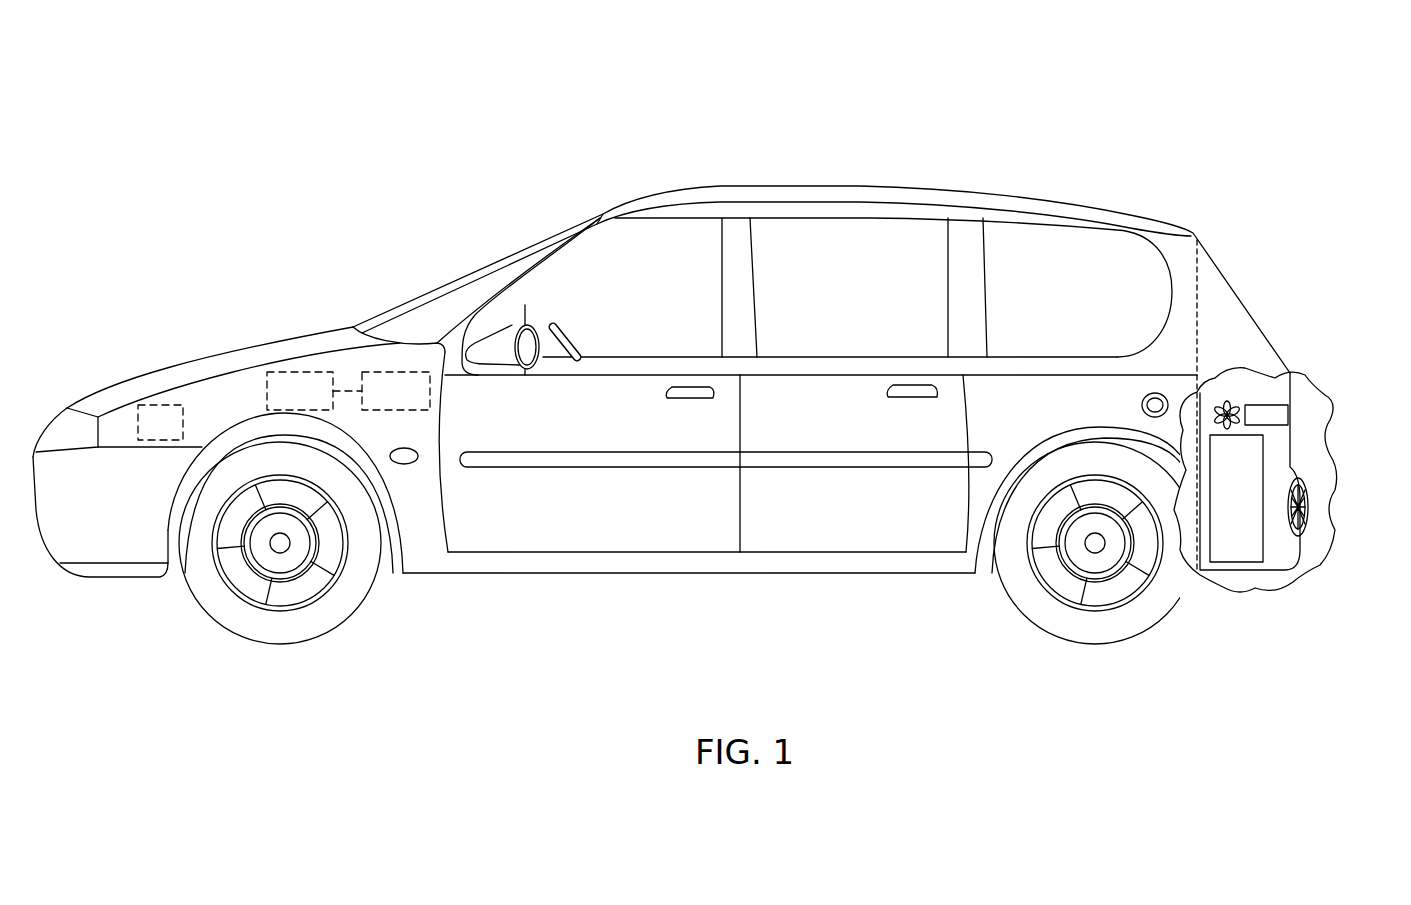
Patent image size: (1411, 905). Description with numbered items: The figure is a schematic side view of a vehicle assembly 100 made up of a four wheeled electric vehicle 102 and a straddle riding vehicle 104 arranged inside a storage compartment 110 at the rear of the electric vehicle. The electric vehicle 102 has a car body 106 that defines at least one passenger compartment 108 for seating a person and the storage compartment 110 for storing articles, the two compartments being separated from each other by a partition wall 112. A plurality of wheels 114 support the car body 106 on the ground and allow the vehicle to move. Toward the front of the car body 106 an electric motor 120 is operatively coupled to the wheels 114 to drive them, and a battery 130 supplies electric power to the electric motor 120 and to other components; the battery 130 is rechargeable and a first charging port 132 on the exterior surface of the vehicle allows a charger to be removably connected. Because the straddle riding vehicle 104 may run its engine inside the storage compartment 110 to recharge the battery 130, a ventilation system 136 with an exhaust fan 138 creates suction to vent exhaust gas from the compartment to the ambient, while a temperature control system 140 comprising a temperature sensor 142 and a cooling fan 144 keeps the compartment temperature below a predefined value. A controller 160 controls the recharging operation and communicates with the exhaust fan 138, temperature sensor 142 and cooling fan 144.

The vehicle assembly 100 is at (322, 152).
The electric vehicle 102 is at (590, 585).
The straddle riding vehicle 104 is at (1240, 562).
The car body 106 is at (812, 532).
The passenger compartment 108 is at (780, 287).
The storage compartment 110 is at (1215, 400).
The partition wall 112 is at (1190, 265).
The wheels 114 is at (257, 627).
The electric motor 120 is at (299, 372).
The battery 130 is at (397, 370).
The first charging port 132 is at (1200, 397).
The ventilation system 136 is at (1308, 478).
The exhaust fan 138 is at (1308, 507).
The temperature control system 140 is at (1293, 373).
The temperature sensor 142 is at (1290, 415).
The cooling fan 144 is at (1270, 390).
The controller 160 is at (168, 405).